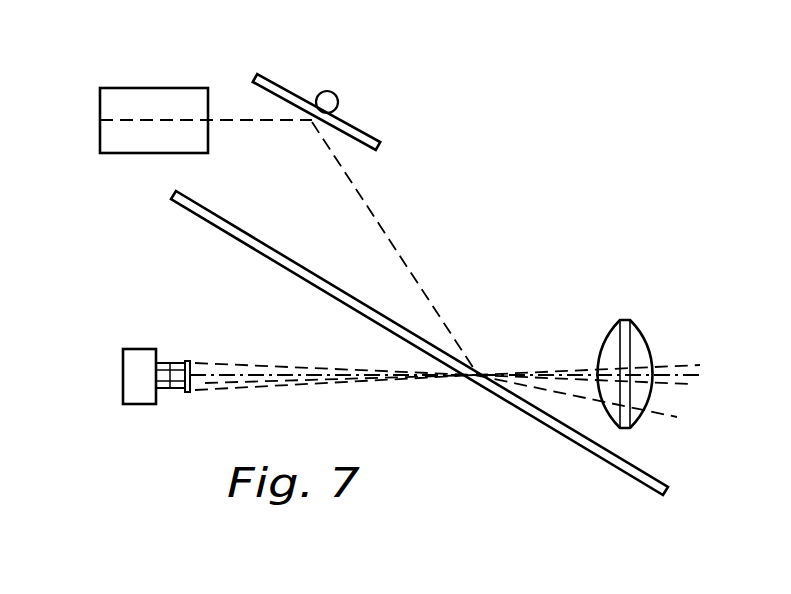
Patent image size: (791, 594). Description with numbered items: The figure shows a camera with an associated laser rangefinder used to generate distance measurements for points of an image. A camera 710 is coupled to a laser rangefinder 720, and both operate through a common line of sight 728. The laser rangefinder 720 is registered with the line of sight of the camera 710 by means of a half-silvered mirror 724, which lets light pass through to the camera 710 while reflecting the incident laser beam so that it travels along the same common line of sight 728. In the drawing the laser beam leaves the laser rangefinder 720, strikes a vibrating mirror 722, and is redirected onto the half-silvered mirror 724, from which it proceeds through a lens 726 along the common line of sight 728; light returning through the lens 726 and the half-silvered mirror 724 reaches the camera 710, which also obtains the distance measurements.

The camera 710 is at (123, 377).
The laser rangefinder 720 is at (152, 88).
The vibrating mirror 722 is at (355, 131).
The half-silvered mirror 724 is at (560, 437).
The lens 726 is at (625, 320).
The common line of sight 728 is at (675, 374).